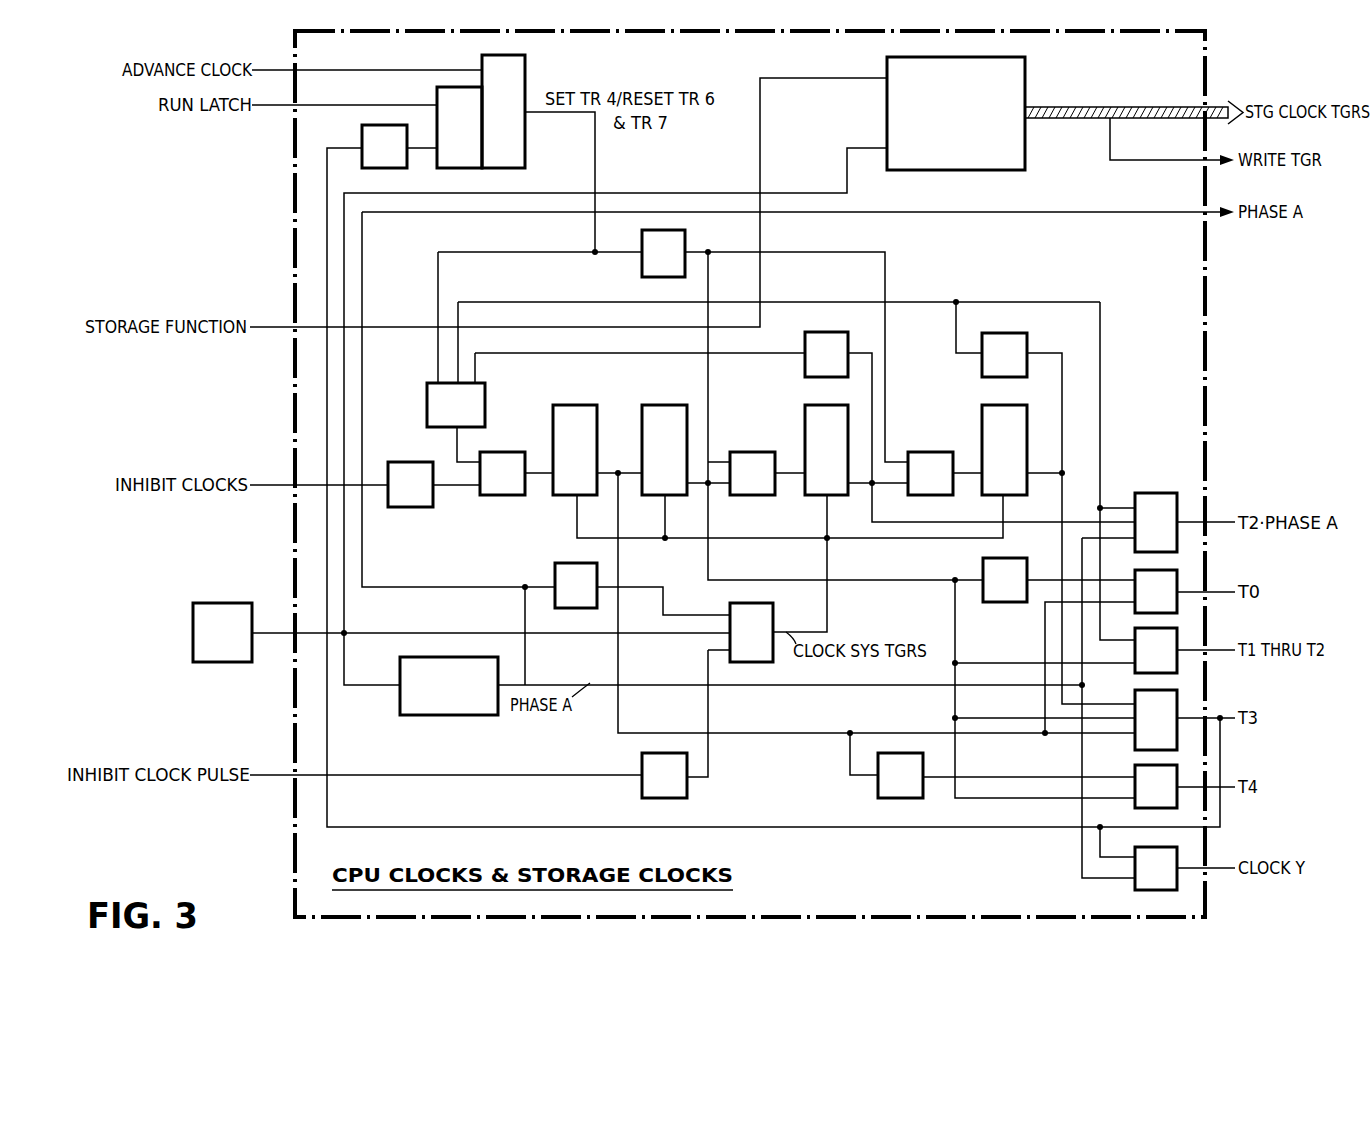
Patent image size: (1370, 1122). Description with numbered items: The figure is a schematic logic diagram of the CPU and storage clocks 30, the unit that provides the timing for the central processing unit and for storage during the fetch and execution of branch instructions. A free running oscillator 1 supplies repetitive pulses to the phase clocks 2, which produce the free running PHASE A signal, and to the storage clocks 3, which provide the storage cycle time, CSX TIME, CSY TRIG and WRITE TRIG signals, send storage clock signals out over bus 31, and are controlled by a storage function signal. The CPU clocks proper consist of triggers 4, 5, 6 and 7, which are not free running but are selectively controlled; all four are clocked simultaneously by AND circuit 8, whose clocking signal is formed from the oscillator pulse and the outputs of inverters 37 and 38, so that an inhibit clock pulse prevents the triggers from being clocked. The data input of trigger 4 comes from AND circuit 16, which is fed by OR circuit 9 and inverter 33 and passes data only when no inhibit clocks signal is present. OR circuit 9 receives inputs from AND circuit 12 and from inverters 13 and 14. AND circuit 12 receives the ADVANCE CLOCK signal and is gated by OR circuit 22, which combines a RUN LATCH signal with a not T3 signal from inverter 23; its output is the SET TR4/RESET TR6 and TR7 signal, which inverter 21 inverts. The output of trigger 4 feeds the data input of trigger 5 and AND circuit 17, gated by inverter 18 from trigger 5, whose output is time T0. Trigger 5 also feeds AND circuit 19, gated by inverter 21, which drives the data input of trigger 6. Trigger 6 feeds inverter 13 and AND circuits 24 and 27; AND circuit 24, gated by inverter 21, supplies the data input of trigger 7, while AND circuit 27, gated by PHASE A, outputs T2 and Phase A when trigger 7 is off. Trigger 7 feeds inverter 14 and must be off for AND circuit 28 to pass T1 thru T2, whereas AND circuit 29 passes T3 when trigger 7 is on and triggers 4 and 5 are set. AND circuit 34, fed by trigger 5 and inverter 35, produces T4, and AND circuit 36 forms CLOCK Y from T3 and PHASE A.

The oscillator 1 is at (222, 603).
The phase clocks 2 is at (400, 666).
The storage clocks 3 is at (1025, 71).
The trigger 4 is at (576, 405).
The trigger 5 is at (659, 405).
The trigger 6 is at (805, 417).
The trigger 7 is at (982, 407).
The AND circuit 8 is at (773, 613).
The OR circuit 9 is at (485, 396).
The AND circuit 12 is at (525, 80).
The inverter 13 is at (805, 370).
The inverter 14 is at (1025, 341).
The AND circuit 16 is at (508, 452).
The AND circuit 17 is at (1168, 570).
The inverter 18 is at (983, 563).
The AND circuit 19 is at (741, 451).
The inverter 21 is at (685, 239).
The OR circuit 22 is at (437, 92).
The inverter 23 is at (362, 130).
The AND circuit 24 is at (920, 451).
The AND circuit 27 is at (1164, 493).
The AND circuit 28 is at (1168, 628).
The AND circuit 29 is at (1168, 691).
The CPU and storage clocks 30 is at (293, 244).
The bus 31 is at (1090, 107).
The inverter 33 is at (393, 462).
The AND circuit 34 is at (1164, 766).
The inverter 35 is at (878, 793).
The AND circuit 36 is at (1135, 888).
The inverter 37 is at (642, 762).
The inverter 38 is at (555, 568).